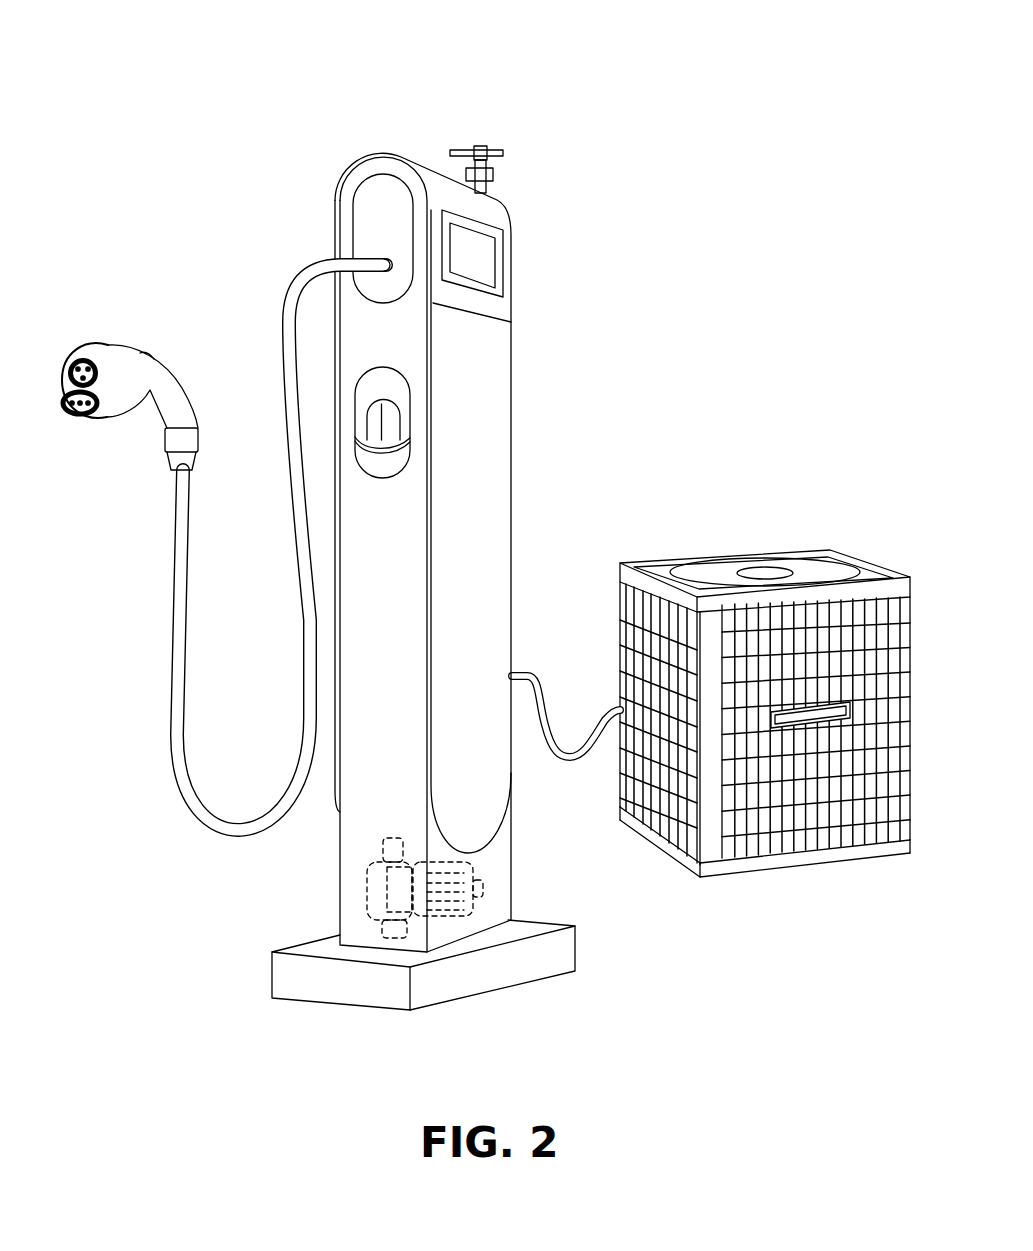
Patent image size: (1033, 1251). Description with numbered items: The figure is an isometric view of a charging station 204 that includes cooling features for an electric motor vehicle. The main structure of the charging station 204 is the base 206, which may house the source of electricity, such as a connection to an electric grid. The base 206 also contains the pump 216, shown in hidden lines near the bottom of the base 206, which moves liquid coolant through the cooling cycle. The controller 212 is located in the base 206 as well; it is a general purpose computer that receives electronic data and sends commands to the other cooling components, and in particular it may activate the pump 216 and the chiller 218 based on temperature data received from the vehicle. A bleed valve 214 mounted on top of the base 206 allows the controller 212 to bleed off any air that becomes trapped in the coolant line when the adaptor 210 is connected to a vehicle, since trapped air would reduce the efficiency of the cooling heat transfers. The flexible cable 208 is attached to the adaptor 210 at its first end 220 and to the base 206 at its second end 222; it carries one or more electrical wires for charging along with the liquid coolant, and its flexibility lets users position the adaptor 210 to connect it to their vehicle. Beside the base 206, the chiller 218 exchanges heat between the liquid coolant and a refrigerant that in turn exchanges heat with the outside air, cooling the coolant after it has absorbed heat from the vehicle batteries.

The charging station 204 is at (402, 90).
The base 206 is at (512, 430).
The cable 208 is at (226, 468).
The adaptor 210 is at (122, 328).
The controller 212 is at (480, 258).
The bleed valve 214 is at (477, 147).
The pump 216 is at (364, 890).
The chiller 218 is at (740, 553).
The first end 220 is at (168, 462).
The second end 222 is at (387, 252).